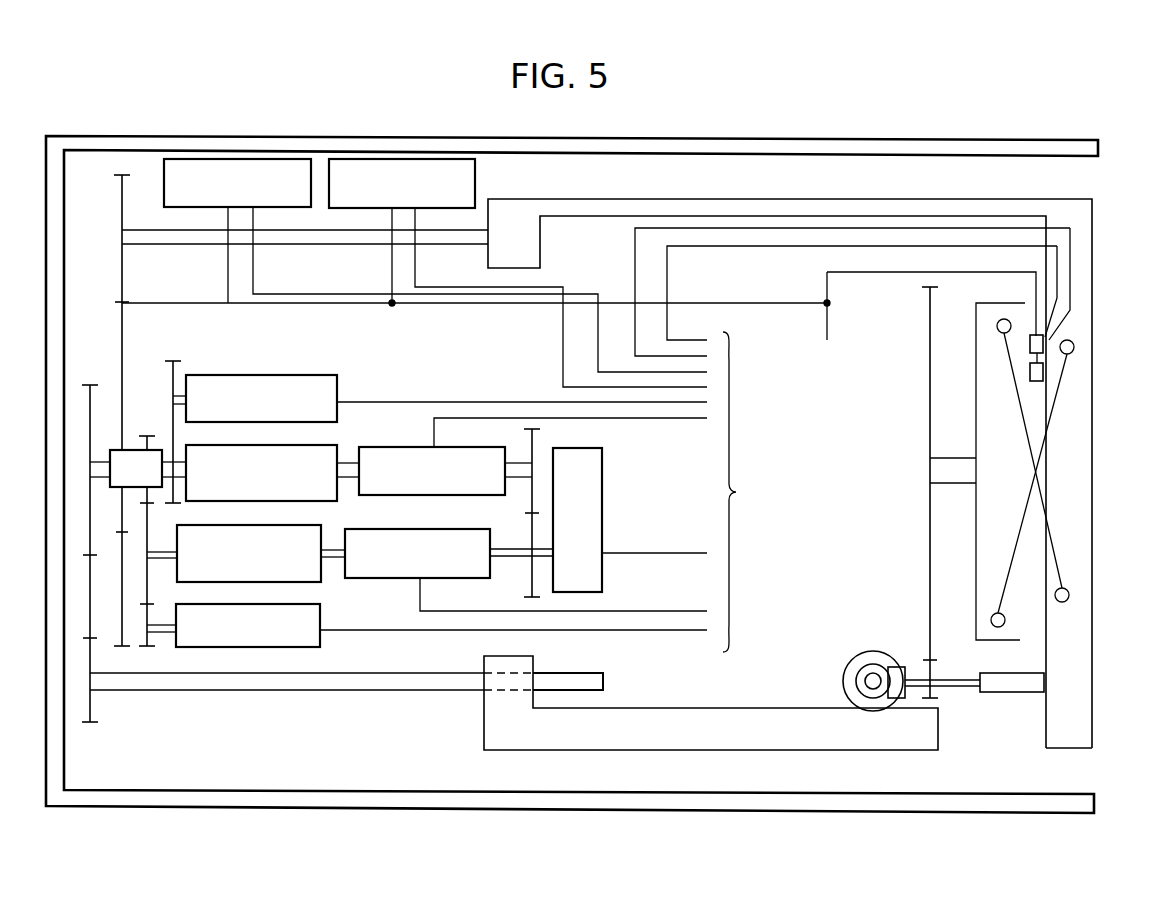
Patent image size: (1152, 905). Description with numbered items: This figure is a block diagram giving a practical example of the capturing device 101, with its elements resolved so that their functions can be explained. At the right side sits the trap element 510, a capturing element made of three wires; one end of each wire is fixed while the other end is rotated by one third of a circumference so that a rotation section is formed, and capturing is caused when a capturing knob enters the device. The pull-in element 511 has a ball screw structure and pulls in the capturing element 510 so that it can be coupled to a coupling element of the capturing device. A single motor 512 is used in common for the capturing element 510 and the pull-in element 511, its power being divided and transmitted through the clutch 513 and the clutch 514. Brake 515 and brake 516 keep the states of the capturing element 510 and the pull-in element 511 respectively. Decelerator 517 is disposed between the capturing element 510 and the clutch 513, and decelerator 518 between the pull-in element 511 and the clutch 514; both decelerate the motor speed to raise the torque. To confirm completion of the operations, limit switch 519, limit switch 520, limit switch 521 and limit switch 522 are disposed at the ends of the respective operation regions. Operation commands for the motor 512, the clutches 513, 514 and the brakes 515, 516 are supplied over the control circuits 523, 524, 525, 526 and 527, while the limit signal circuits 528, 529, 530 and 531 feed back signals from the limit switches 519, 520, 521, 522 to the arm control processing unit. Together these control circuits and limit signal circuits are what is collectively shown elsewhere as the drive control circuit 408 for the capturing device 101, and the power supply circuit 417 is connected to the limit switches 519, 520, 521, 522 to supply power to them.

The capturing device 101 is at (866, 114).
The drive control circuit 408 is at (762, 492).
The power supply circuit 417 is at (828, 306).
The trap element 510 is at (1092, 566).
The pull-in element 511 is at (531, 199).
The motor 512 is at (604, 496).
The clutch 513 is at (440, 495).
The clutch 514 is at (447, 579).
The brake 515 is at (278, 375).
The brake 516 is at (320, 646).
The decelerator 517 is at (323, 445).
The decelerator 518 is at (320, 583).
The limit switch 519 is at (1044, 373).
The limit switch 520 is at (1030, 341).
The limit switch 521 is at (378, 159).
The limit switch 522 is at (198, 159).
The control circuit 523 is at (642, 553).
The control circuit 524 is at (640, 418).
The control circuit 525 is at (630, 611).
The control circuit 526 is at (340, 402).
The control circuit 527 is at (633, 630).
The limit signal circuit 528 is at (718, 246).
The limit signal circuit 529 is at (635, 250).
The limit signal circuit 530 is at (563, 350).
The limit signal circuit 531 is at (253, 273).